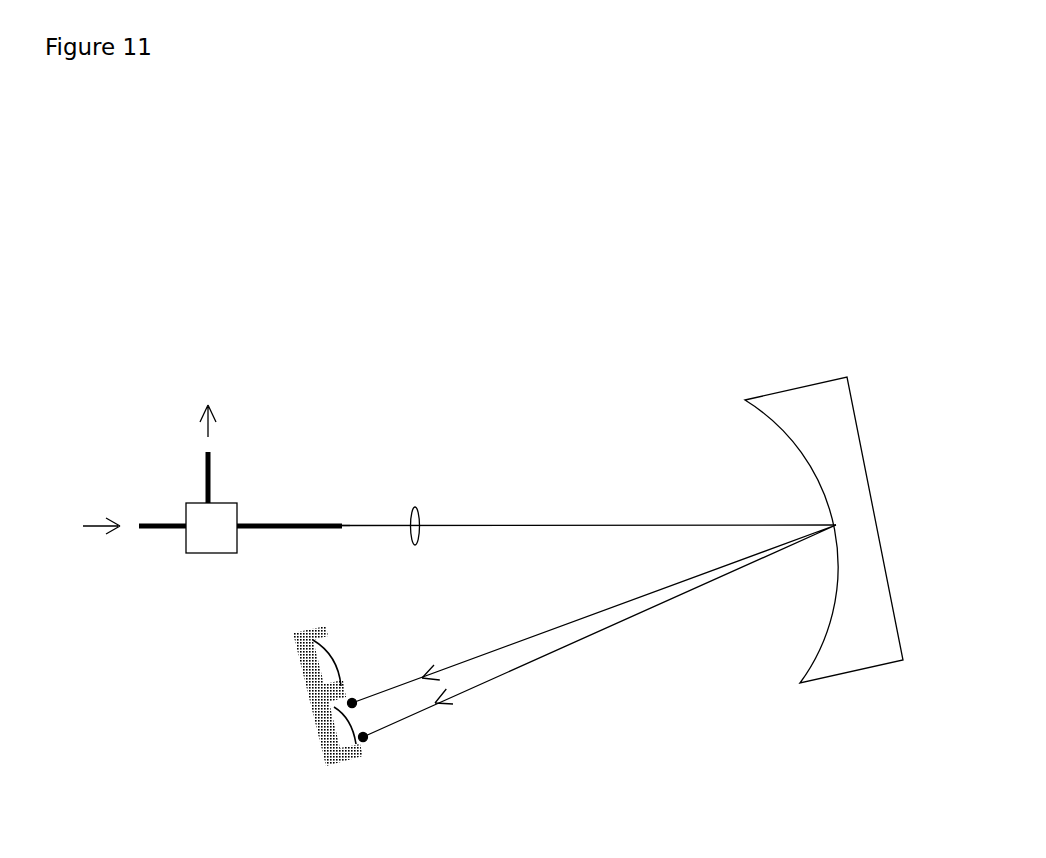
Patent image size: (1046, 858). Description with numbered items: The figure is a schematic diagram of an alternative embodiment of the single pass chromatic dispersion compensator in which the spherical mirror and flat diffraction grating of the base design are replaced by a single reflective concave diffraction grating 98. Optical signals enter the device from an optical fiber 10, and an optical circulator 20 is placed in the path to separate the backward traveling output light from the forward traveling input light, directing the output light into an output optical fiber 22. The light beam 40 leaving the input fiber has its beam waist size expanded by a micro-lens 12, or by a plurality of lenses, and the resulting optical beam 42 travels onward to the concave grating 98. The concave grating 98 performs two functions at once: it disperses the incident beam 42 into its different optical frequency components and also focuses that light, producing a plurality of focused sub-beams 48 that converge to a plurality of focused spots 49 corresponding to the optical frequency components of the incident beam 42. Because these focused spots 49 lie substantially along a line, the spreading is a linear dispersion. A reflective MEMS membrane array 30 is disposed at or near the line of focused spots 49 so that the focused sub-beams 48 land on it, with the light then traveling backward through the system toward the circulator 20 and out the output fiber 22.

The optical fiber 10 is at (152, 530).
The optical circulator 20 is at (210, 543).
The output optical fiber 22 is at (210, 470).
The light beam 40 is at (366, 525).
The micro-lens 12 is at (412, 505).
The optical beam 42 is at (603, 522).
The reflective concave diffraction grating 98 is at (830, 678).
The focused sub-beams 48 is at (482, 657).
The focused spots 49 is at (360, 708).
The reflective MEMS membrane array 30 is at (317, 717).